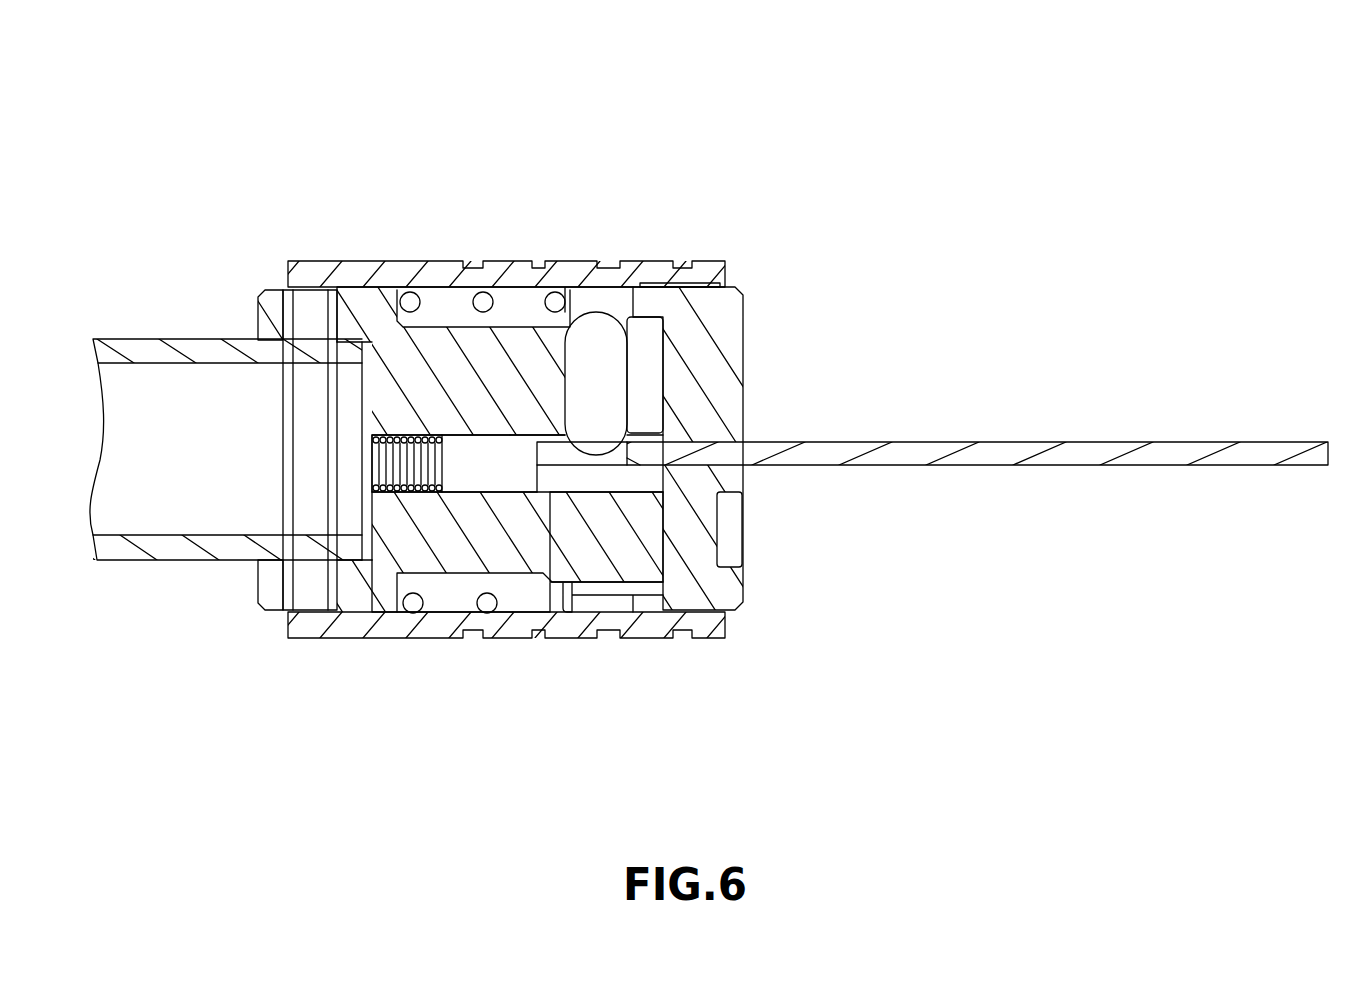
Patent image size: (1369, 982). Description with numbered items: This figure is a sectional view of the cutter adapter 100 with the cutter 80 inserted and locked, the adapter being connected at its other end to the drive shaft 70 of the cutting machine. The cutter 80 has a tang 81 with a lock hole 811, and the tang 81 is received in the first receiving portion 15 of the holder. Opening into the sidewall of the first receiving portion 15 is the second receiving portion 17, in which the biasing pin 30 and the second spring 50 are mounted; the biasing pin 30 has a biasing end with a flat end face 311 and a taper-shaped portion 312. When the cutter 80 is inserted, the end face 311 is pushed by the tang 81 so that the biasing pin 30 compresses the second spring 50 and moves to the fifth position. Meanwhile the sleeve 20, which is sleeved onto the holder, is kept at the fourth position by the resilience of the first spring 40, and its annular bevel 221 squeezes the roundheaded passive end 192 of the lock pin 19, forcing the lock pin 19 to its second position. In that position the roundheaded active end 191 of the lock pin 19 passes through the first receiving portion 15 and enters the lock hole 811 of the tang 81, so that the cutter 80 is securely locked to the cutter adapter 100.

The cutter adapter 100 is at (397, 142).
The drive shaft 70 is at (180, 339).
The sleeve 20 is at (575, 283).
The biasing pin 30 is at (465, 475).
The first spring 40 is at (483, 292).
The first receiving portion 15 is at (532, 432).
The second spring 50 is at (398, 470).
The taper-shaped portion 312 is at (500, 470).
The end face 311 is at (530, 446).
The second receiving portion 17 is at (598, 480).
The lock pin 19 is at (610, 370).
The passive end 192 is at (640, 312).
The active end 191 is at (630, 456).
The annular bevel 221 is at (645, 303).
The cutter 80 is at (1112, 442).
The tang 81 is at (557, 455).
The lock hole 811 is at (668, 464).